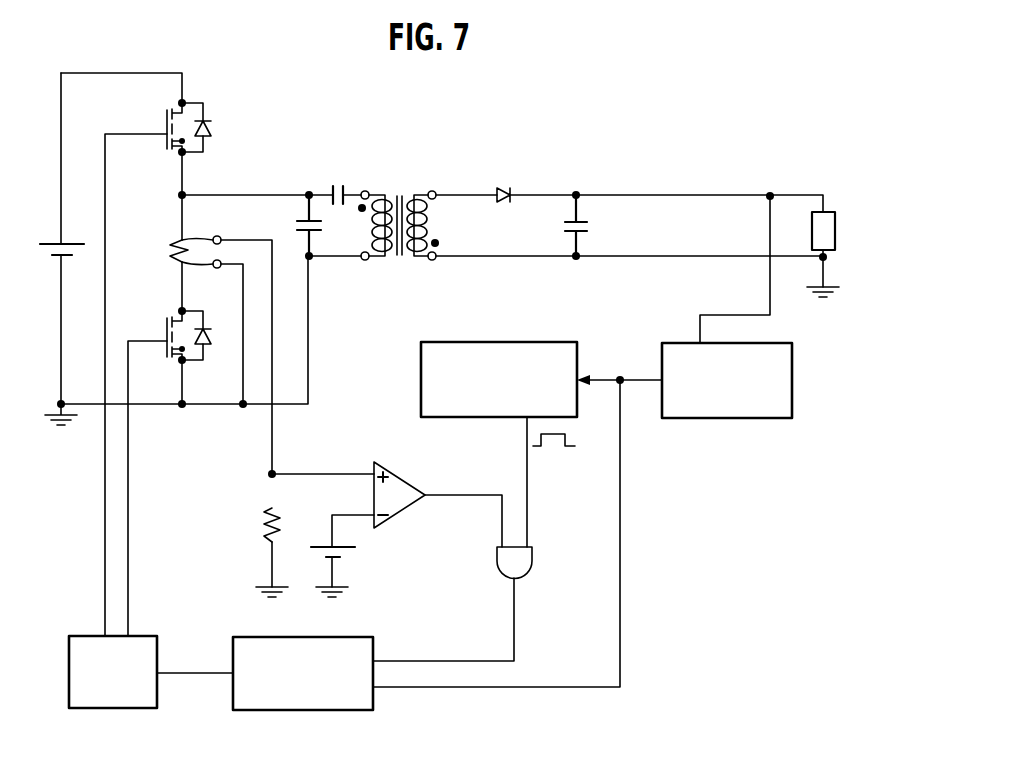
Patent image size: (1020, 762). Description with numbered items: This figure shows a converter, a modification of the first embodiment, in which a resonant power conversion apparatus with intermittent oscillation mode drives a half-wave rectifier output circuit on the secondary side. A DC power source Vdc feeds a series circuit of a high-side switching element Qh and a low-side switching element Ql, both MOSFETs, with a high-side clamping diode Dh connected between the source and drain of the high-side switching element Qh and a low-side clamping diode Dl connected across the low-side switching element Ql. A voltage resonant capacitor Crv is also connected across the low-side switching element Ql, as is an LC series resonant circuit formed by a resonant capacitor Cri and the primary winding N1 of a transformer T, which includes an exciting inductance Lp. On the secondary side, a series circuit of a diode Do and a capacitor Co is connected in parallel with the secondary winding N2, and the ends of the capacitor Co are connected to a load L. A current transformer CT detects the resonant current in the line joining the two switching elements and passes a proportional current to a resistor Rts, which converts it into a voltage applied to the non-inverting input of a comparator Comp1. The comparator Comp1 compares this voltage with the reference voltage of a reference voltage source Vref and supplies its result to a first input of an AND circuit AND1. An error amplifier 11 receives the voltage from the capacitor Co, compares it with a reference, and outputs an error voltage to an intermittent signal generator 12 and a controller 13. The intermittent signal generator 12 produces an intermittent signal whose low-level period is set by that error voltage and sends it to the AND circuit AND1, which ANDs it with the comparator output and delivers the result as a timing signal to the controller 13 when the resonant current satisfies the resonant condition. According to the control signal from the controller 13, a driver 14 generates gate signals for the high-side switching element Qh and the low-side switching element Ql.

The error amplifier 11 is at (697, 418).
The intermittent signal generator 12 is at (527, 342).
The controller 13 is at (373, 641).
The driver 14 is at (145, 636).
The DC power source Vdc is at (51, 263).
The high-side switching element Qh is at (166, 136).
The high-side clamping diode Dh is at (212, 127).
The low-side switching element Ql is at (166, 343).
The low-side clamping diode Dl is at (210, 335).
The current transformer CT is at (217, 236).
The voltage resonant capacitor Crv is at (292, 225).
The resonant capacitor Cri is at (338, 181).
The transformer T is at (395, 194).
The primary winding N1 is at (377, 214).
The secondary winding N2 is at (421, 214).
The exciting inductance Lp is at (362, 220).
The diode Do is at (507, 182).
The capacitor Co is at (591, 225).
The load L is at (823, 231).
The resistor Rts is at (255, 525).
The reference voltage source Vref is at (351, 564).
The comparator Comp1 is at (397, 473).
The AND circuit AND1 is at (524, 576).